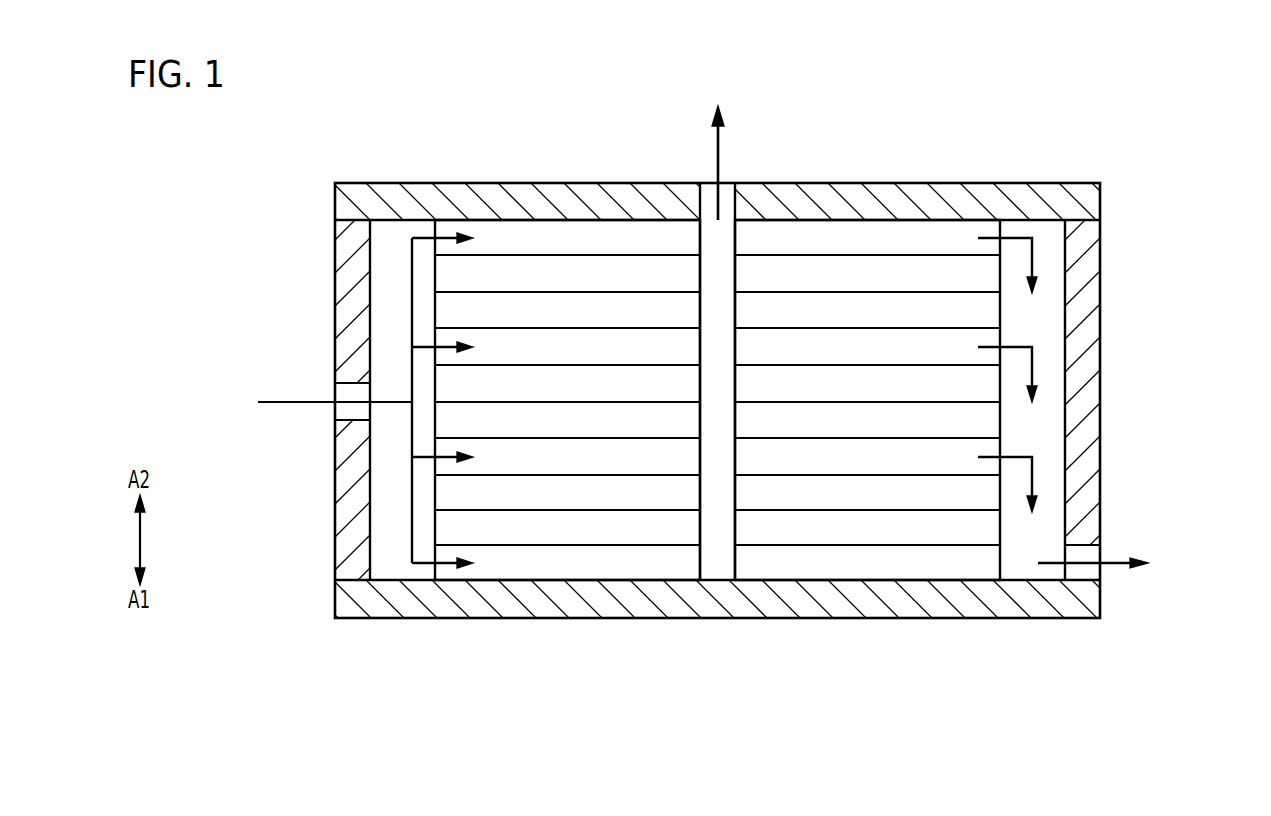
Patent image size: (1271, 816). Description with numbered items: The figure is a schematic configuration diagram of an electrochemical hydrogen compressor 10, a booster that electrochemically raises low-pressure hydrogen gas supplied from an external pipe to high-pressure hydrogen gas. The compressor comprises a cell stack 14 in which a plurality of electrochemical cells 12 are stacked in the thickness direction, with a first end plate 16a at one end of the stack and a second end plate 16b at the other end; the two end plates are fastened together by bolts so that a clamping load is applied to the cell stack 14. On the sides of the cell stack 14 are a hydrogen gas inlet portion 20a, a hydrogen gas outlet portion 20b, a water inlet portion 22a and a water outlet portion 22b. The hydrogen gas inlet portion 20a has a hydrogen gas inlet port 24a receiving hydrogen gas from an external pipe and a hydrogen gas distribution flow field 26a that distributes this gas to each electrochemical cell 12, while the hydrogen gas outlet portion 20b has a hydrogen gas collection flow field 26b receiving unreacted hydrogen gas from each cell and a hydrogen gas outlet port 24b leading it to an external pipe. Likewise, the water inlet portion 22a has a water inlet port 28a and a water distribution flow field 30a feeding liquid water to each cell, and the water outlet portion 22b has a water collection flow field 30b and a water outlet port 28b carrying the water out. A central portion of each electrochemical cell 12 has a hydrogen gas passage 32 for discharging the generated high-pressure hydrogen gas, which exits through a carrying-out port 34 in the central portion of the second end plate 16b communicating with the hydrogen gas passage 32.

The electrochemical hydrogen compressor 10 is at (1158, 102).
The electrochemical cell 12 is at (552, 525).
The cell stack 14 is at (705, 390).
The first end plate 16a is at (1060, 605).
The second end plate 16b is at (1042, 193).
The hydrogen gas inlet portion 20a is at (268, 404).
The water inlet portion 22a is at (322, 252).
The hydrogen gas outlet portion 20b is at (1154, 392).
The water outlet portion 22b is at (1118, 287).
The hydrogen gas inlet port 24a is at (306, 433).
The water inlet port 28a is at (340, 410).
The hydrogen gas distribution flow field 26a is at (336, 400).
The water distribution flow field 30a is at (385, 508).
The hydrogen gas collection flow field 26b is at (1110, 375).
The water outlet port 28b is at (1037, 425).
The hydrogen gas outlet port 24b is at (1128, 598).
The water collection flow field 30b is at (1093, 573).
The hydrogen gas passage 32 is at (723, 567).
The carrying-out port 34 is at (710, 198).